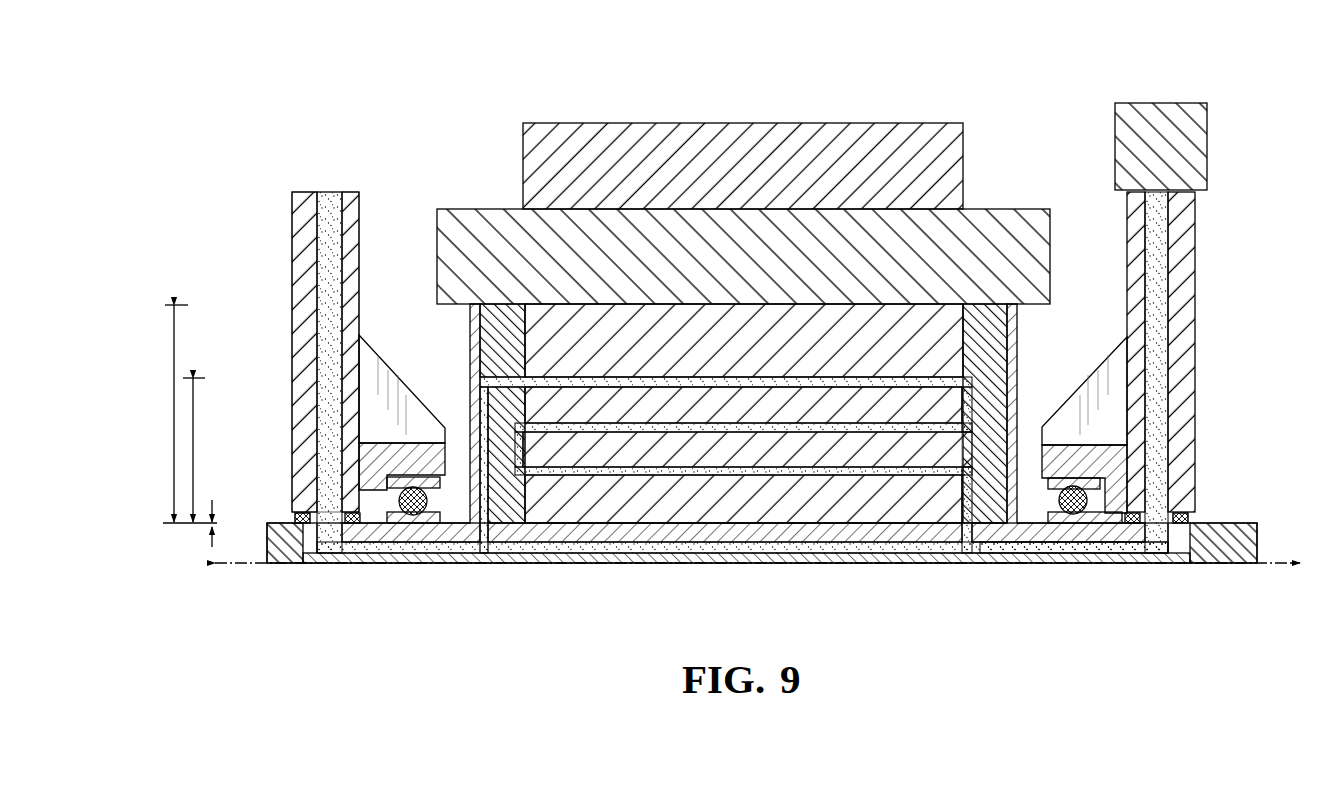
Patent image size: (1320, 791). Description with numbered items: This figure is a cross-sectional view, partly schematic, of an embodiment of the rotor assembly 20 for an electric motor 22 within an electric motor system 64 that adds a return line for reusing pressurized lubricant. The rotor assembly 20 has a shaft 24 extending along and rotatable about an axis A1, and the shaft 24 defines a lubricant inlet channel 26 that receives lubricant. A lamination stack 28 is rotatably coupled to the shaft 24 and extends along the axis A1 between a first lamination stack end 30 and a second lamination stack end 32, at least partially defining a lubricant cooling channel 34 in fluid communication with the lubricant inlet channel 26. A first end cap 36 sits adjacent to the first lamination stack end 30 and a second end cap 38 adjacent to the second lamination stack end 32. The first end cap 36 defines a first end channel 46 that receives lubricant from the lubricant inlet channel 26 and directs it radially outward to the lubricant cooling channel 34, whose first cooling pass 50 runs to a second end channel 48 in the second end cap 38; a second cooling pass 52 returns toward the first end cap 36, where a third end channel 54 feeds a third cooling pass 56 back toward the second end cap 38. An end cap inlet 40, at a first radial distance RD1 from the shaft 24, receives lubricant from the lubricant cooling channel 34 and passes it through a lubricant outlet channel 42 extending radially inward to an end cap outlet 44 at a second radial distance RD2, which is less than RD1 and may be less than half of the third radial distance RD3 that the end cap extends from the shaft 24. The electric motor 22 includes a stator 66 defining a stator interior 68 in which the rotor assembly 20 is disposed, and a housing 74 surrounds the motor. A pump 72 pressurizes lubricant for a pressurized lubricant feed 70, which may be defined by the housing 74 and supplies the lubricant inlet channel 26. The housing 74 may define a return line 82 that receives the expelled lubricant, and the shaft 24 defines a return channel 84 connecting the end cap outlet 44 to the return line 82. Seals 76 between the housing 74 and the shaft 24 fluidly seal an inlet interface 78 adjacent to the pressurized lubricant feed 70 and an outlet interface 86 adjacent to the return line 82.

The rotor assembly 20 is at (445, 365).
The electric motor 22 is at (896, 82).
The shaft 24 is at (278, 563).
The lubricant inlet channel 26 is at (1017, 552).
The lamination stack 28 is at (725, 325).
The first lamination stack end 30 is at (947, 330).
The second lamination stack end 32 is at (540, 330).
The lubricant cooling channel 34 is at (663, 507).
The first end cap 36 is at (985, 350).
The second end cap 38 is at (500, 337).
The end cap inlet 40 is at (505, 378).
The lubricant outlet channel 42 is at (483, 437).
The end cap outlet 44 is at (470, 538).
The first end channel 46 is at (965, 492).
The second end channel 48 is at (521, 447).
The first cooling pass 50 is at (888, 476).
The second cooling pass 52 is at (797, 427).
The third end channel 54 is at (968, 400).
The third cooling pass 56 is at (742, 387).
The electric motor system 64 is at (368, 145).
The stator 66 is at (985, 250).
The stator interior 68 is at (455, 322).
The pressurized lubricant feed 70 is at (1160, 330).
The pump 72 is at (1208, 152).
The housing 74 is at (305, 228).
The seal 76 is at (353, 525).
The inlet interface 78 is at (1200, 513).
The return line 82 is at (330, 262).
The return channel 84 is at (400, 552).
The outlet interface 86 is at (288, 513).
The axis A1 is at (1278, 560).
The first radial distance RD1 is at (194, 412).
The second radial distance RD2 is at (212, 500).
The third radial distance RD3 is at (176, 348).